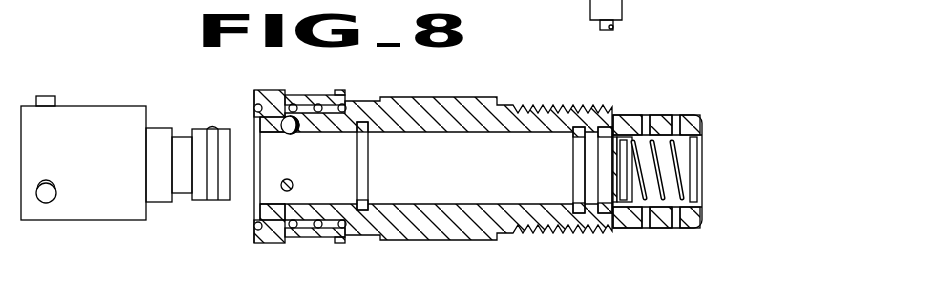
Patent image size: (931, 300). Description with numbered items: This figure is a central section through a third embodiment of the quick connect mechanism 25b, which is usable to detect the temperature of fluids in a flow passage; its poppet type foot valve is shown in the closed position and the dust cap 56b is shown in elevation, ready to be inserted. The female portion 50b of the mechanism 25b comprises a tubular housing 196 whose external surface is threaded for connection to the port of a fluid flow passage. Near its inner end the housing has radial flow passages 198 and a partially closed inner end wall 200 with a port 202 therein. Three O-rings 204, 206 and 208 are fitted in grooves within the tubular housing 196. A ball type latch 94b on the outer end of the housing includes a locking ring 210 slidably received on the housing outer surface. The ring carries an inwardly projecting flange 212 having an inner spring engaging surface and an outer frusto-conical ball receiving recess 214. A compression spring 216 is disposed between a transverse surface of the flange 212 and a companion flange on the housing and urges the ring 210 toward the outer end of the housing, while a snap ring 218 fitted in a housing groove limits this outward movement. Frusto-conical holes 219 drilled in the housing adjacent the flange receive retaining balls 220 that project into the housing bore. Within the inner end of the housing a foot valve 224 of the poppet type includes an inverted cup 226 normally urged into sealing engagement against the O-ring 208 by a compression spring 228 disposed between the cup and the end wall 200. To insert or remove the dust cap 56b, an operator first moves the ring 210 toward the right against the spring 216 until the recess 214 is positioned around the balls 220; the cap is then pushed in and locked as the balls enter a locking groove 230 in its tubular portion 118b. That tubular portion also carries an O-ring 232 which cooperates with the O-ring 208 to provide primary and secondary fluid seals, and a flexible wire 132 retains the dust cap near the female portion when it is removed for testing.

The quick connect mechanism 25b is at (484, 167).
The female portion 50b is at (686, 170).
The dust cap 56b is at (126, 164).
The ball type latch 94b is at (259, 142).
The tubular portion 118b is at (222, 203).
The flexible wire 132 is at (613, 26).
The tubular housing 196 is at (453, 100).
The radial flow passages 198 is at (677, 115).
The inner end wall 200 is at (692, 202).
The port 202 is at (700, 175).
The O-ring 204 is at (368, 133).
The O-ring 206 is at (573, 140).
The O-ring 208 is at (600, 205).
The locking ring 210 is at (268, 90).
The inwardly projecting flange 212 is at (255, 98).
The frusto-conical ball receiving recess 214 is at (254, 109).
The compression spring 216 is at (322, 106).
The snap ring 218 is at (258, 243).
The frusto-conical holes 219 is at (294, 134).
The retaining balls 220 is at (290, 134).
The foot valve 224 is at (604, 171).
The inverted cup 226 is at (622, 217).
The compression spring 228 is at (697, 132).
The locking groove 230 is at (178, 159).
The O-ring 232 is at (207, 202).